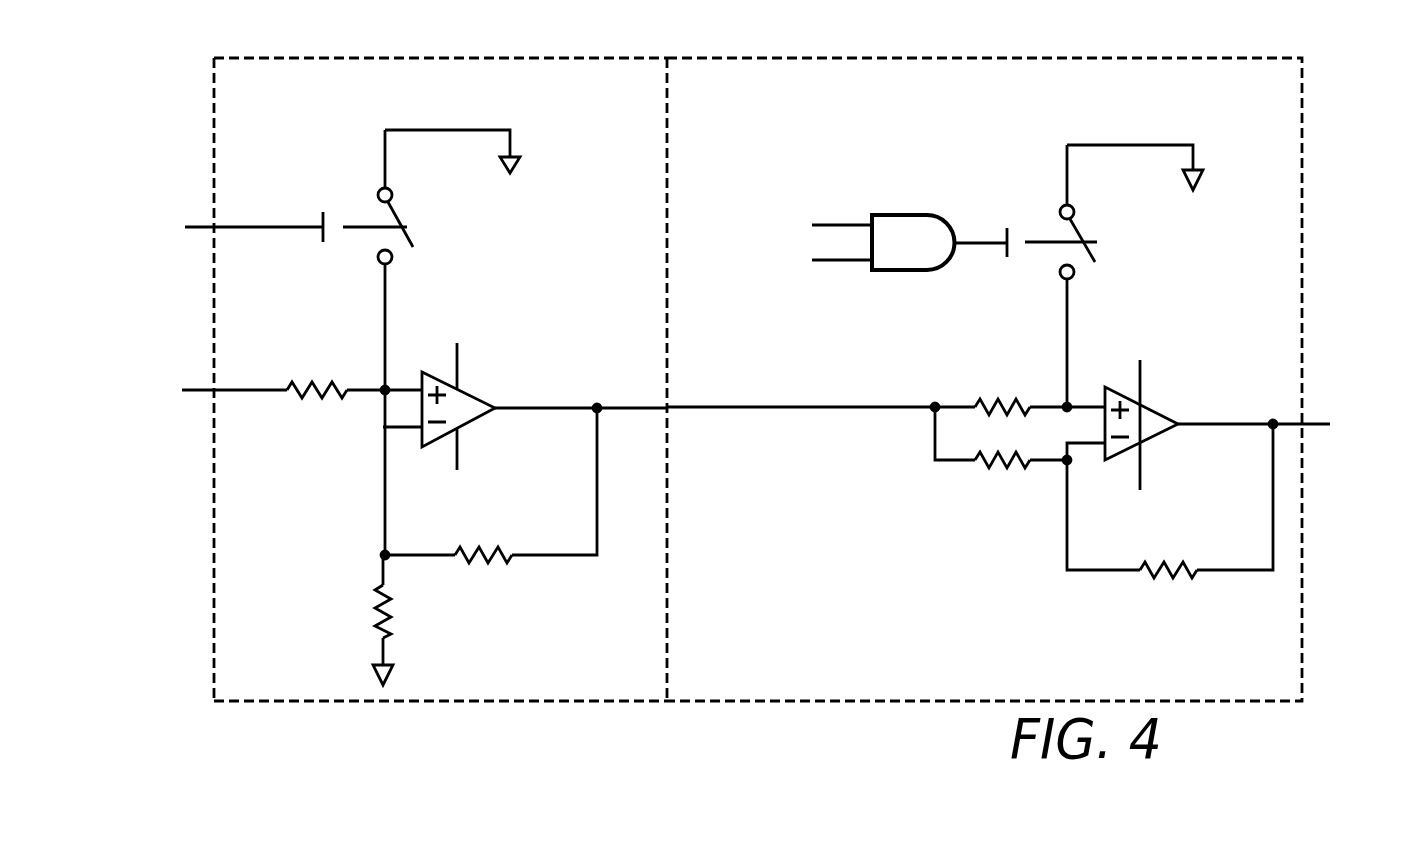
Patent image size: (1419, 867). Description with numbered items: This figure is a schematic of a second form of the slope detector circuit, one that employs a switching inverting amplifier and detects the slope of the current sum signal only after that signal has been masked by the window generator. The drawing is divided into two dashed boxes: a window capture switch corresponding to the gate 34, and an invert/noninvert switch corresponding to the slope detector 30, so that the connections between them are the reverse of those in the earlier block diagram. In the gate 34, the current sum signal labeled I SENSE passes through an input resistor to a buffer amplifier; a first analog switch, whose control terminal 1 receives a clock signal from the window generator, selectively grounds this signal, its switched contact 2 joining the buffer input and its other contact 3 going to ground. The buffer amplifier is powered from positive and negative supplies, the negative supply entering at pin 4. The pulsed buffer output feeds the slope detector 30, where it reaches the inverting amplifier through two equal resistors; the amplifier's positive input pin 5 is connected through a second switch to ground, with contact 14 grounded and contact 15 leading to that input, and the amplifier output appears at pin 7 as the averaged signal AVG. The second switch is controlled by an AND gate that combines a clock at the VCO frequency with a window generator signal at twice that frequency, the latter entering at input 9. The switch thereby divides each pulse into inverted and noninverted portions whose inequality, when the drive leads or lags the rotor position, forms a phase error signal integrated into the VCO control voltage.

The gate 34 is at (372, 50).
The slope detector 30 is at (887, 50).
The switch SW1 input terminal / op-amp U11A output pin 1 is at (426, 300).
The switch SW1 pole terminal / op-amp U11A inverting input pin 2 is at (400, 402).
The switch SW1 ground terminal / op-amp U11A non-inverting input pin 3 is at (433, 260).
The op-amp U11A negative supply pin 4 is at (452, 469).
The op-amp U11B non-inverting input pin 5 is at (1067, 389).
The op-amp U11B output pin 7 is at (1254, 406).
The gate U5C input pin 9 is at (842, 242).
The switch SW2 ground terminal 14 is at (1131, 182).
The switch SW2 pole terminal 15 is at (1083, 336).